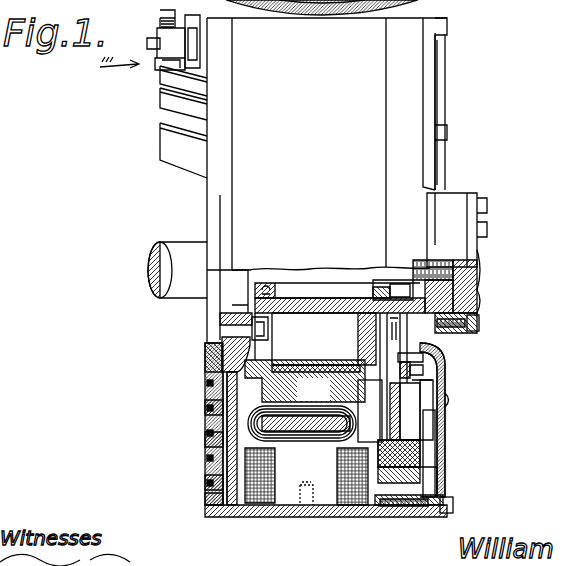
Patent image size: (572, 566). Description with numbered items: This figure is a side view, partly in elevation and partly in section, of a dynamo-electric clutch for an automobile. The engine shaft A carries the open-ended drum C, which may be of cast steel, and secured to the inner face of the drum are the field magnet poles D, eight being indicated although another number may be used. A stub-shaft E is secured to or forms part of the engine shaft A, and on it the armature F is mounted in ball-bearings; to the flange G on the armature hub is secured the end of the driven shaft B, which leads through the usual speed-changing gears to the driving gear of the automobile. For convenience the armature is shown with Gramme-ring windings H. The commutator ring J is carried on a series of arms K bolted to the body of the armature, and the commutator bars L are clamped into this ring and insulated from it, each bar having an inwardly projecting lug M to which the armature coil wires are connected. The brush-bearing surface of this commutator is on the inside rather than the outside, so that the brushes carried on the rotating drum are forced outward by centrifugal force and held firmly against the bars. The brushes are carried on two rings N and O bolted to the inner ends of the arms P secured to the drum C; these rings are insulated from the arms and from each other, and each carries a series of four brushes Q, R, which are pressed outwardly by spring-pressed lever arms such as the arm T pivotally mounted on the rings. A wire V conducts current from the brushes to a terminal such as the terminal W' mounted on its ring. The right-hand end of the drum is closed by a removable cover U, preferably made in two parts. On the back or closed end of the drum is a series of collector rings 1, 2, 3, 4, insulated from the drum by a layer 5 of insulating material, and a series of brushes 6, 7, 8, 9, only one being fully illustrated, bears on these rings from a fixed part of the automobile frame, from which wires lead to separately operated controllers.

The collector ring 1 is at (208, 352).
The collector ring 2 is at (207, 408).
The collector ring 3 is at (207, 440).
The collector ring 4 is at (207, 482).
The layer of insulating material 5 is at (207, 500).
The brush 6 is at (199, 47).
The brush 7 is at (125, 86).
The brush 8 is at (167, 98).
The brush 9 is at (168, 142).
The engine shaft A is at (190, 268).
The driven shaft B is at (478, 292).
The drum C is at (407, 95).
The field magnet poles D is at (290, 493).
The stub-shaft E is at (276, 280).
The armature F is at (288, 372).
The flange G is at (448, 193).
The Gramme-ring windings H is at (255, 408).
The commutator ring J is at (380, 473).
The arms K is at (360, 402).
The commutator bars L is at (427, 455).
The lug M is at (370, 455).
The brush-carrying ring N is at (358, 323).
The brush-carrying ring O is at (452, 357).
The arms P is at (427, 477).
The brush Q is at (425, 426).
The brush R is at (372, 354).
The spring-pressed lever arm T is at (450, 349).
The removable cover U is at (443, 115).
The wire V is at (425, 400).
The terminal W' is at (483, 378).